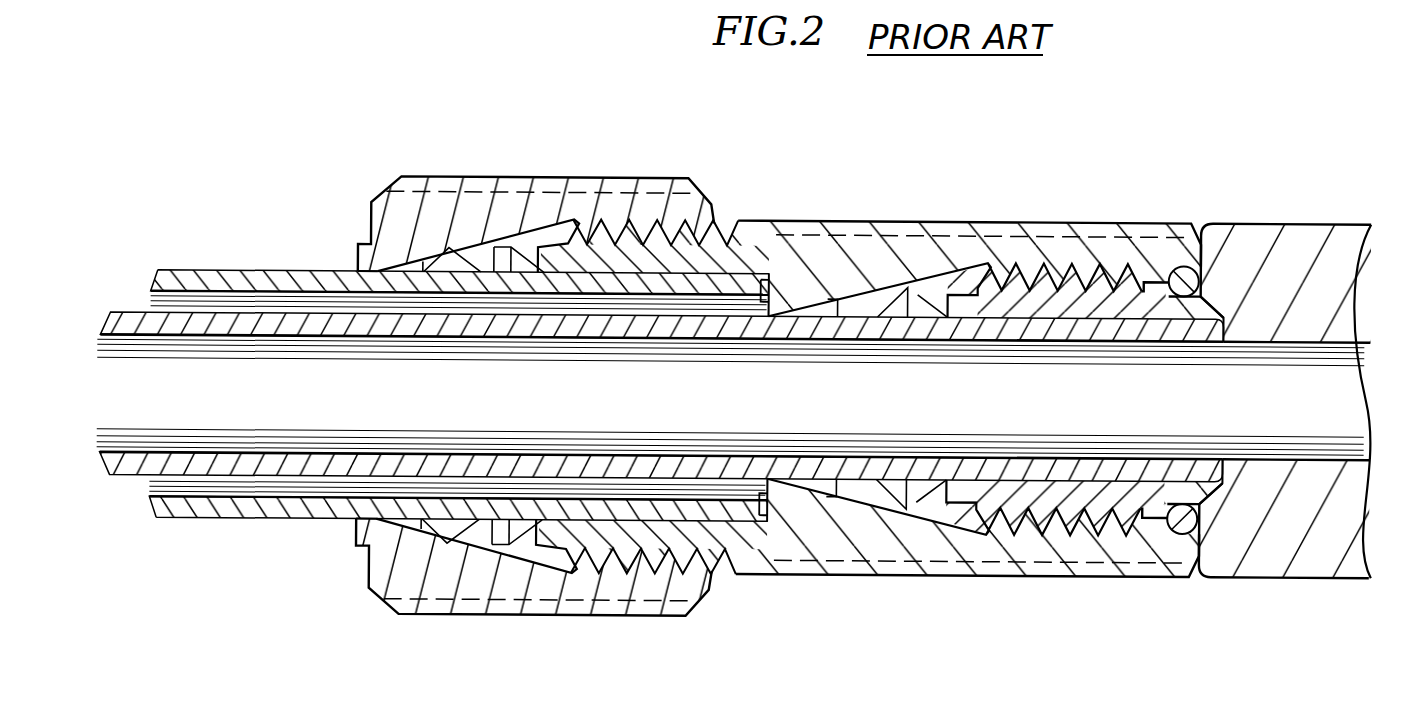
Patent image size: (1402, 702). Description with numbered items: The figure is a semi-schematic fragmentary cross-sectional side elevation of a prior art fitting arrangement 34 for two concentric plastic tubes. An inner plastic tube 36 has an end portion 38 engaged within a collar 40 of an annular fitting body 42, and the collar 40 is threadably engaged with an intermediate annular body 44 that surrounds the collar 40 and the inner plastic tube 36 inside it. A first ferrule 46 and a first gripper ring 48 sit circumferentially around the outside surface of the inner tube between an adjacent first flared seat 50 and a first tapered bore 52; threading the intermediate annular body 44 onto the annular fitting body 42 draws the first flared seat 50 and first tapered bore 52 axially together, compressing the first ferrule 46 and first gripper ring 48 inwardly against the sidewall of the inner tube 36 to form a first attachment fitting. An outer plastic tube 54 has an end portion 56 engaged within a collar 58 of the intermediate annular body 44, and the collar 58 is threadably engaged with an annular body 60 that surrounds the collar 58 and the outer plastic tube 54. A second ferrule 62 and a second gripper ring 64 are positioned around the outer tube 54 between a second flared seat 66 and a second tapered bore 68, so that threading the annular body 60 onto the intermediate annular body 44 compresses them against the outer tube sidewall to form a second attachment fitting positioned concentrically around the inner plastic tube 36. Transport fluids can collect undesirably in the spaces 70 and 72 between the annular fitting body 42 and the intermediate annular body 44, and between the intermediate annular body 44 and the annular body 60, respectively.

The fitting arrangement 34 is at (371, 178).
The inner plastic tube 36 is at (1090, 330).
The end portion 38 is at (1223, 330).
The collar 40 is at (1090, 296).
The annular fitting body 42 is at (1293, 237).
The intermediate annular body 44 is at (880, 260).
The first ferrule 46 is at (937, 318).
The first gripper ring 48 is at (900, 300).
The first flared seat 50 is at (958, 300).
The first tapered bore 52 is at (827, 300).
The outer plastic tube 54 is at (210, 280).
The end portion 56 is at (772, 280).
The collar 58 is at (640, 228).
The annular body 60 is at (471, 178).
The second ferrule 62 is at (508, 262).
The second gripper ring 64 is at (478, 262).
The second flared seat 66 is at (543, 266).
The second tapered bore 68 is at (413, 263).
The space 70 is at (968, 280).
The space 72 is at (545, 240).